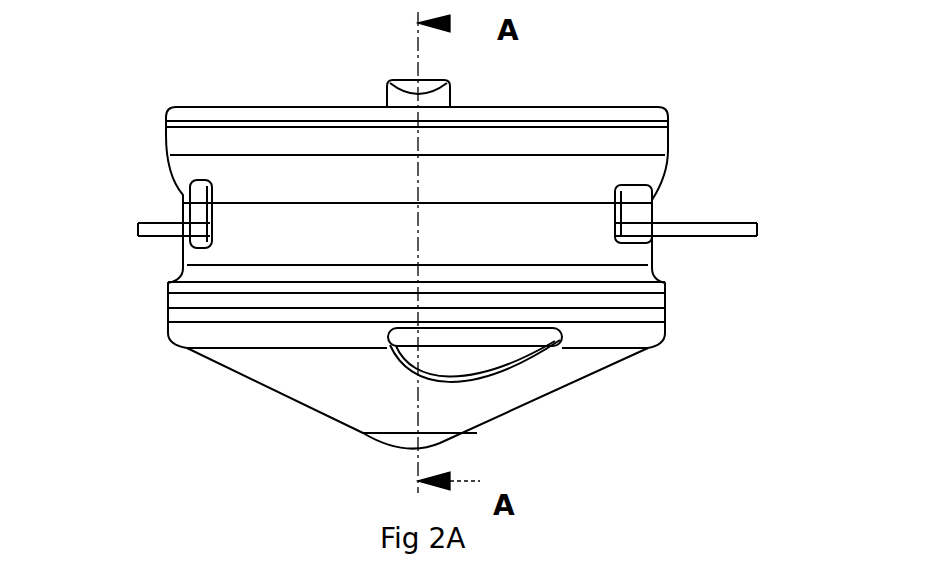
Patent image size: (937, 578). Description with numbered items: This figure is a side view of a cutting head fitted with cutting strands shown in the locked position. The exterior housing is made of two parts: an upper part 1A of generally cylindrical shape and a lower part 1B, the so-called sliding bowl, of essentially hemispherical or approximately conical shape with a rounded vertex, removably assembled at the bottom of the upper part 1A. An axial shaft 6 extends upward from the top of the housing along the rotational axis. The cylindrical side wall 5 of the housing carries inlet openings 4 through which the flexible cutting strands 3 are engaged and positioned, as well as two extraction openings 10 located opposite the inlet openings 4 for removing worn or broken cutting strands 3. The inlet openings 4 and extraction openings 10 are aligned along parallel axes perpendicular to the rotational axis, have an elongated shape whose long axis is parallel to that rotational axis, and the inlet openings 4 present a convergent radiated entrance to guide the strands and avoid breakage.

The upper part 1A is at (458, 223).
The lower part 1B is at (340, 375).
The cutting strands 3 is at (170, 230).
The inlet openings 4 is at (628, 207).
The side wall 5 is at (323, 188).
The axial shaft 6 is at (387, 97).
The extraction openings 10 is at (203, 205).